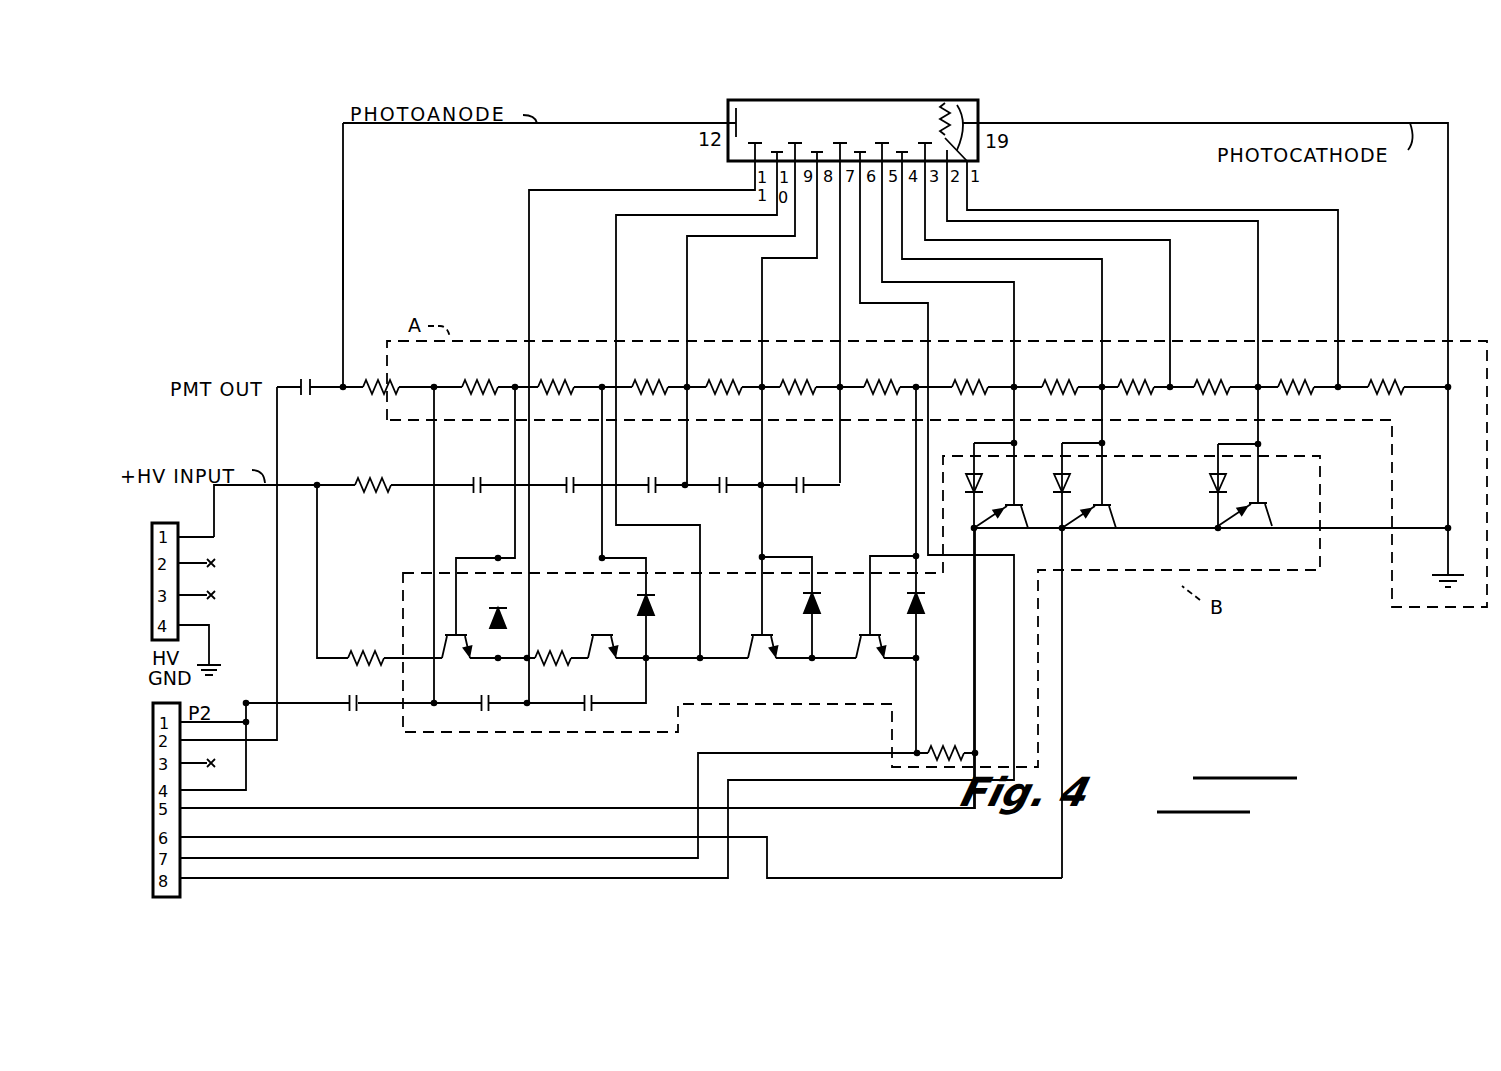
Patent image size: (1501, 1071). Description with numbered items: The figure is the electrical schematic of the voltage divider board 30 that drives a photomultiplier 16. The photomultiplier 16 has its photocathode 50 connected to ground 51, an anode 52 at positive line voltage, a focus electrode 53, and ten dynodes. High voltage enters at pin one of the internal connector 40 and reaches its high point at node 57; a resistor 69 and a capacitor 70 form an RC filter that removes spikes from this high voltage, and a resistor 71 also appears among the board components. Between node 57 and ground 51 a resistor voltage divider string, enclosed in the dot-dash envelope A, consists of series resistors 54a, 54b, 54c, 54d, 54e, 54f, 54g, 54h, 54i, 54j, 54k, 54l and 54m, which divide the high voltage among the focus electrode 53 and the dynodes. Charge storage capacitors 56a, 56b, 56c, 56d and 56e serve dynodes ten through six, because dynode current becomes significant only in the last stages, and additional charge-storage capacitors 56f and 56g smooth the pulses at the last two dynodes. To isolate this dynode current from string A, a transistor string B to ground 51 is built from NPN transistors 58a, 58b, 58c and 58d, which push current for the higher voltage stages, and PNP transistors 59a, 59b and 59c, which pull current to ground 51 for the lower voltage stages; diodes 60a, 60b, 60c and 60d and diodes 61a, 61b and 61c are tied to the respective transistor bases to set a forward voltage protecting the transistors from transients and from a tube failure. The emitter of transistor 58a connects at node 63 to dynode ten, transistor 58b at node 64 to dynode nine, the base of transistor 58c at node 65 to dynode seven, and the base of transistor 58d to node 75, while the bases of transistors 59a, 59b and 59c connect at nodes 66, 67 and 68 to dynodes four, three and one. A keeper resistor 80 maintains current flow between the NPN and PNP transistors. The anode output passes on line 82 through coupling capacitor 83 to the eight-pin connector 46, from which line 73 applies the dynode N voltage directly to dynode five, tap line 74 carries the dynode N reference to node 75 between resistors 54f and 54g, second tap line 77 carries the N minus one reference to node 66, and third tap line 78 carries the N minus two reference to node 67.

The photomultiplier 16 is at (896, 100).
The voltage divider board 30 is at (1247, 121).
The internal connector 40 is at (168, 521).
The board connector 46 is at (180, 888).
The photocathode 50 is at (972, 115).
The ground 51 is at (1441, 590).
The anode 52 is at (732, 112).
The focus electrode 53 is at (948, 103).
The resistor 54a is at (481, 383).
The resistor 54b is at (564, 383).
The resistor 54c is at (653, 383).
The resistor 54d is at (728, 383).
The resistor 54e is at (803, 383).
The resistor 54f is at (895, 383).
The resistor 54g is at (968, 383).
The resistor 54h is at (1064, 383).
The resistor 54i is at (1134, 383).
The resistor 54j is at (1217, 383).
The resistor 54k is at (1300, 383).
The resistor 54l is at (1390, 383).
The resistor 54m is at (395, 384).
The charge storage capacitor 56a is at (472, 482).
The charge storage capacitor 56b is at (565, 482).
The charge storage capacitor 56c is at (647, 482).
The charge storage capacitor 56d is at (718, 482).
The charge storage capacitor 56e is at (795, 482).
The charge storage capacitor 56f is at (484, 715).
The charge storage capacitor 56g is at (588, 715).
The node 57 is at (513, 390).
The NPN transistor 58a is at (445, 634).
The NPN transistor 58b is at (595, 640).
The NPN transistor 58c is at (759, 640).
The NPN transistor 58d is at (868, 652).
The PNP transistor 59a is at (1020, 519).
The PNP transistor 59b is at (1104, 519).
The PNP transistor 59c is at (1261, 519).
The diode 60a is at (507, 614).
The diode 60b is at (658, 606).
The diode 60c is at (822, 606).
The diode 60d is at (926, 606).
The diode 61a is at (970, 470).
The diode 61b is at (1056, 470).
The diode 61c is at (1208, 484).
The node 63 is at (524, 662).
The node 64 is at (702, 662).
The node 65 is at (766, 554).
The node 66 is at (1017, 385).
The node 67 is at (1105, 390).
The node 68 is at (1260, 390).
The resistor 69 is at (340, 480).
The capacitor 70 is at (346, 700).
The resistor 71 is at (342, 656).
The line 73 is at (814, 782).
The tap line 74 is at (812, 751).
The node 75 is at (913, 390).
The second tap line 77 is at (952, 810).
The third tap line 78 is at (993, 877).
The resistor 80 is at (940, 747).
The line 82 is at (343, 212).
The coupling capacitor 83 is at (298, 377).